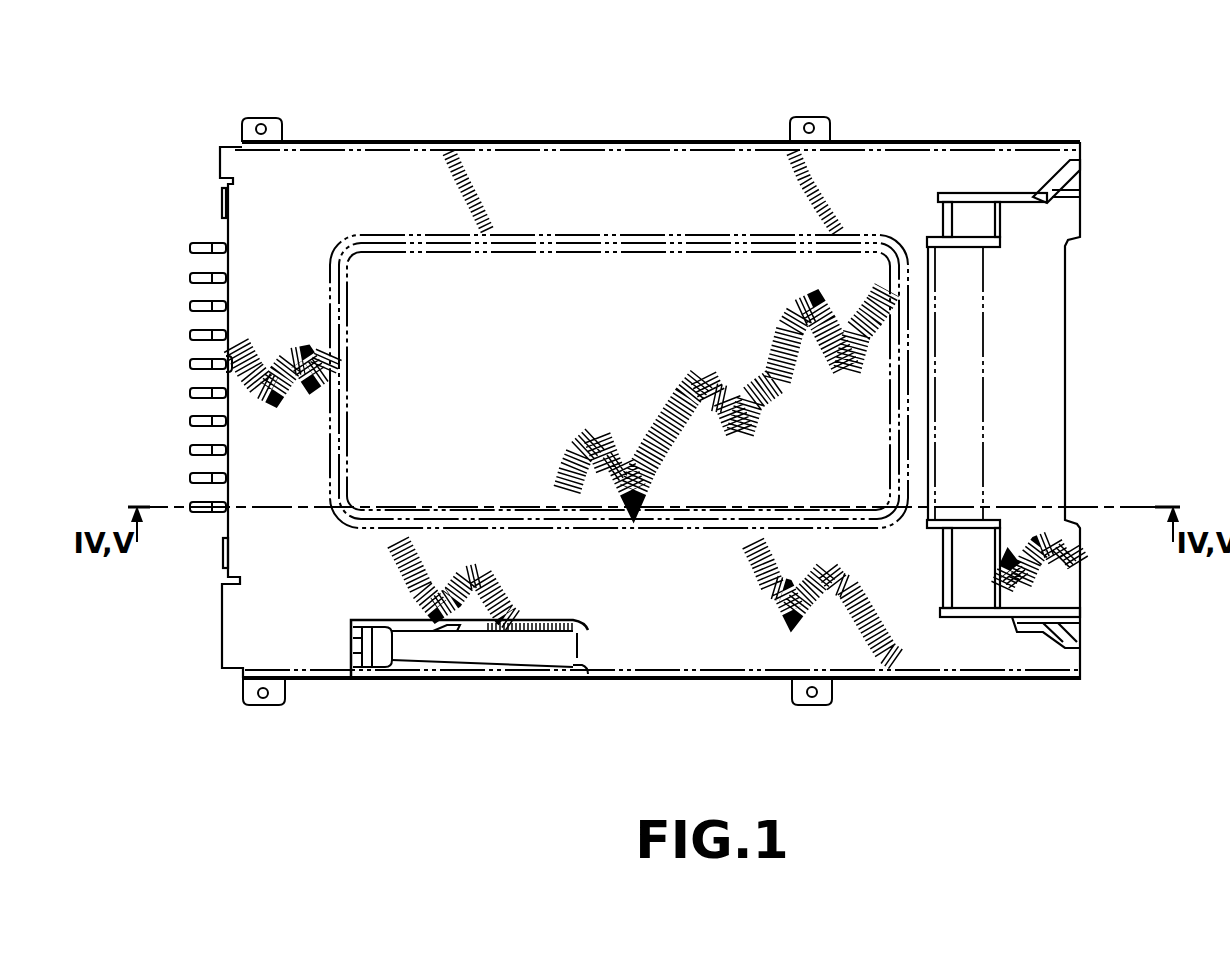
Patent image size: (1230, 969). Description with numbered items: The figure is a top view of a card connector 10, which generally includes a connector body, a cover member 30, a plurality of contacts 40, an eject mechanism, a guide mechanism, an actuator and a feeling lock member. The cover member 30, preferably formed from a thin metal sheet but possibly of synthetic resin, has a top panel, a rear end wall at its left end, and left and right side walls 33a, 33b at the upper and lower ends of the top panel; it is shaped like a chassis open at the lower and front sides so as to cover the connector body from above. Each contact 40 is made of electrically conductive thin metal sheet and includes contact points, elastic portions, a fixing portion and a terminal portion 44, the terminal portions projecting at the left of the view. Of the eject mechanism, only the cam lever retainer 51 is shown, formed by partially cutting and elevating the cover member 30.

The card connector 10 is at (990, 108).
The cover member 30 is at (860, 188).
The left side wall 33a is at (645, 141).
The right side wall 33b is at (694, 680).
The contacts 40 is at (182, 306).
The terminal portion 44 is at (190, 250).
The cam lever retainer 51 is at (483, 648).